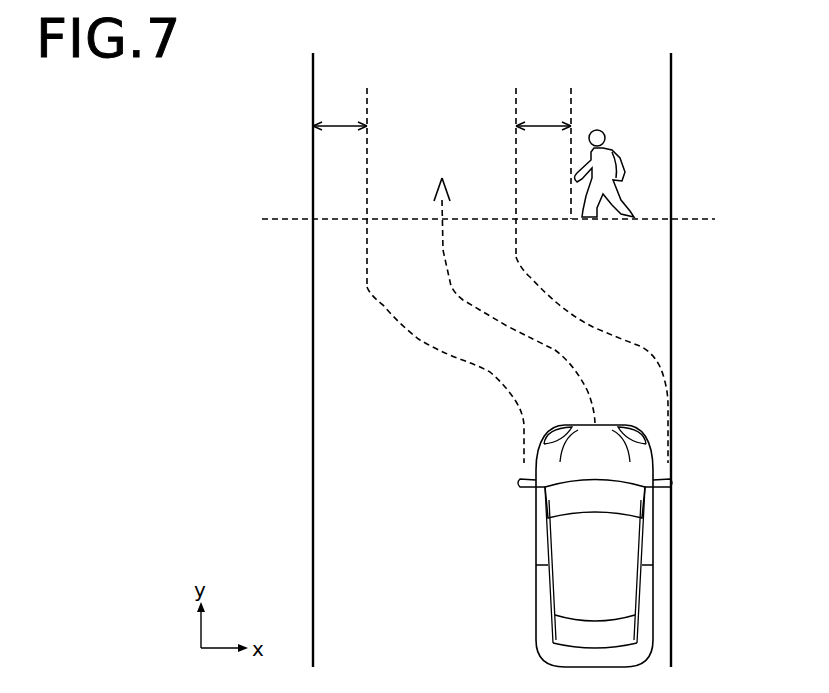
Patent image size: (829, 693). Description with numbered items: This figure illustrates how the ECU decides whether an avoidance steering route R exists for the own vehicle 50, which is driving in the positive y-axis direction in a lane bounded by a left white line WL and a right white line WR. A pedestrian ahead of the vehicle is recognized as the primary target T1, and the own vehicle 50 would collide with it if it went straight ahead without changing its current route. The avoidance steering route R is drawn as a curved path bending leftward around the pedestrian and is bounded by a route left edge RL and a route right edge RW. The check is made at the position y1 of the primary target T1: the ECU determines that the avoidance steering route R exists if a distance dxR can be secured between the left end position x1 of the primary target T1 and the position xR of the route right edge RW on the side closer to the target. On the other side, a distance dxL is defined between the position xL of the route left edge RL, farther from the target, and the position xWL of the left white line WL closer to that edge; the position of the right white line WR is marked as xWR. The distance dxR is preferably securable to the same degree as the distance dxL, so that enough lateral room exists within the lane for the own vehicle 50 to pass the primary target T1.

The own vehicle 50 is at (653, 630).
The primary target T1 is at (618, 157).
The left white line WL is at (313, 278).
The right white line WR is at (671, 278).
The avoidance steering route R is at (453, 290).
The route left edge RL is at (489, 372).
The route right edge RW is at (640, 346).
The position of the primary target y1 is at (507, 216).
The position of the route left edge xL is at (366, 172).
The position of the route right edge xR is at (514, 157).
The left end position of the primary target x1 is at (573, 138).
The position of the left white line xWL is at (313, 29).
The position of the right white line xWR is at (672, 32).
The distance dxL is at (340, 113).
The distance dxR is at (543, 113).